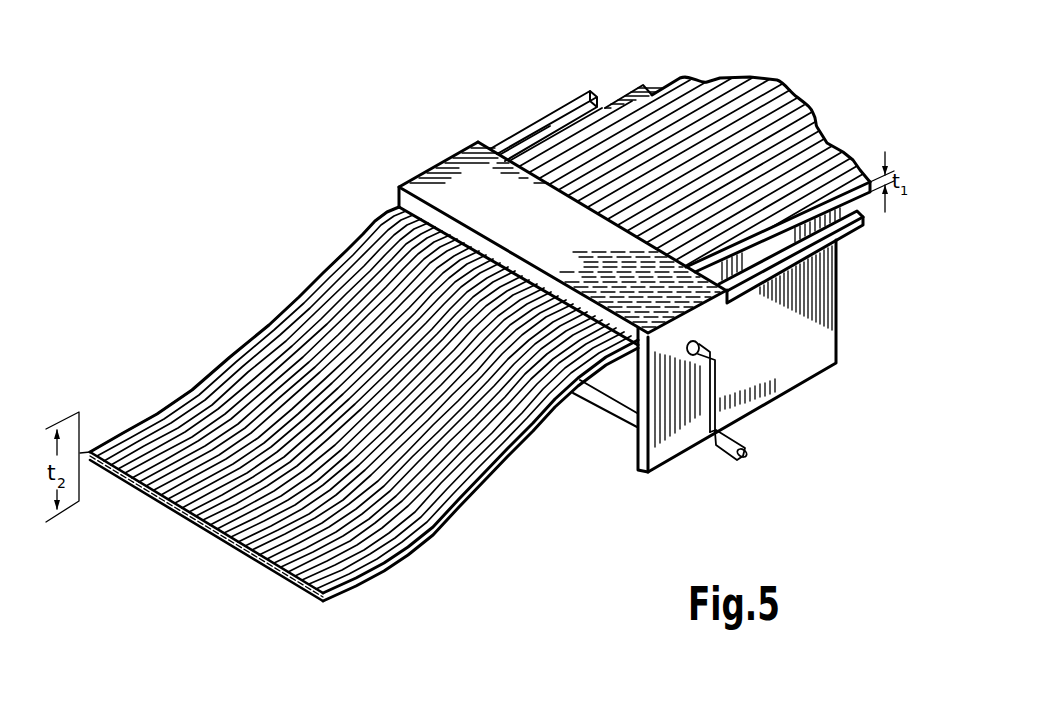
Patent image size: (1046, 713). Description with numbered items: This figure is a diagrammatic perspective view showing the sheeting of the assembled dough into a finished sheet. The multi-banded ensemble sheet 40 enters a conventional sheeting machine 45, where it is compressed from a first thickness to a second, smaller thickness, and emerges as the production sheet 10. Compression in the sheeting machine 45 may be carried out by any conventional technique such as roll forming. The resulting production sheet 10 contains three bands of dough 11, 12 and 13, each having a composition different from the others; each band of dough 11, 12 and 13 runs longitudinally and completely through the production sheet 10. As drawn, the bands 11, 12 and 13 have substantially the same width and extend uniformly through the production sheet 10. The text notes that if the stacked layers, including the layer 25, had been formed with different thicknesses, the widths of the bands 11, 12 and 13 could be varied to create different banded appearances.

The production sheet 10 is at (432, 494).
The band of dough 11 is at (212, 526).
The band of dough 12 is at (222, 533).
The band of dough 13 is at (230, 541).
The ensemble sheet 40 is at (685, 107).
The sheeting machine 45 is at (770, 353).
The layer 25 is at (355, 0).